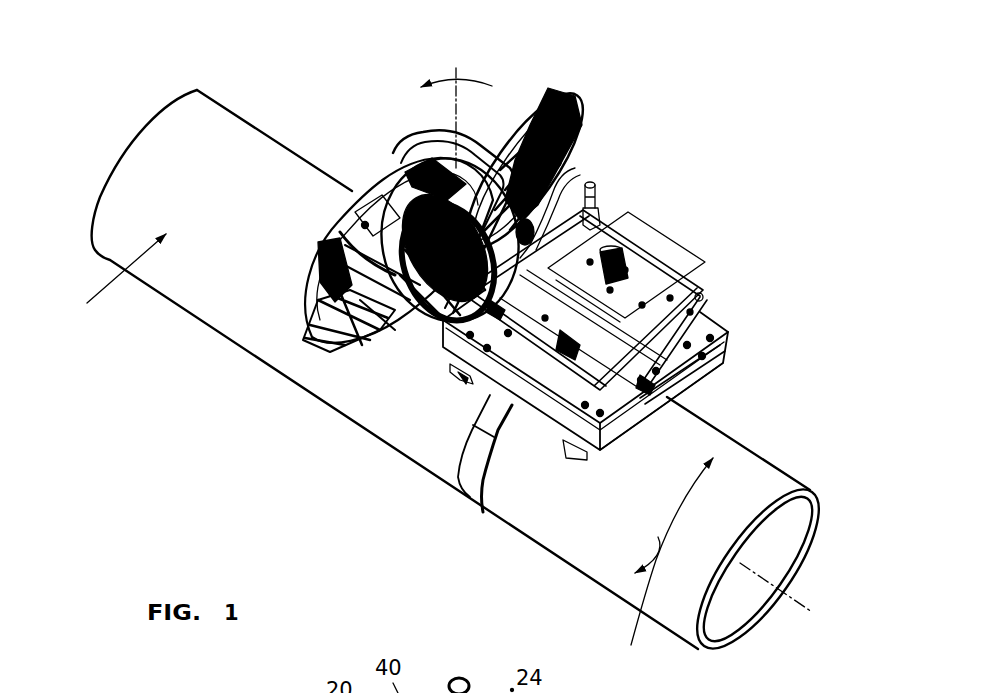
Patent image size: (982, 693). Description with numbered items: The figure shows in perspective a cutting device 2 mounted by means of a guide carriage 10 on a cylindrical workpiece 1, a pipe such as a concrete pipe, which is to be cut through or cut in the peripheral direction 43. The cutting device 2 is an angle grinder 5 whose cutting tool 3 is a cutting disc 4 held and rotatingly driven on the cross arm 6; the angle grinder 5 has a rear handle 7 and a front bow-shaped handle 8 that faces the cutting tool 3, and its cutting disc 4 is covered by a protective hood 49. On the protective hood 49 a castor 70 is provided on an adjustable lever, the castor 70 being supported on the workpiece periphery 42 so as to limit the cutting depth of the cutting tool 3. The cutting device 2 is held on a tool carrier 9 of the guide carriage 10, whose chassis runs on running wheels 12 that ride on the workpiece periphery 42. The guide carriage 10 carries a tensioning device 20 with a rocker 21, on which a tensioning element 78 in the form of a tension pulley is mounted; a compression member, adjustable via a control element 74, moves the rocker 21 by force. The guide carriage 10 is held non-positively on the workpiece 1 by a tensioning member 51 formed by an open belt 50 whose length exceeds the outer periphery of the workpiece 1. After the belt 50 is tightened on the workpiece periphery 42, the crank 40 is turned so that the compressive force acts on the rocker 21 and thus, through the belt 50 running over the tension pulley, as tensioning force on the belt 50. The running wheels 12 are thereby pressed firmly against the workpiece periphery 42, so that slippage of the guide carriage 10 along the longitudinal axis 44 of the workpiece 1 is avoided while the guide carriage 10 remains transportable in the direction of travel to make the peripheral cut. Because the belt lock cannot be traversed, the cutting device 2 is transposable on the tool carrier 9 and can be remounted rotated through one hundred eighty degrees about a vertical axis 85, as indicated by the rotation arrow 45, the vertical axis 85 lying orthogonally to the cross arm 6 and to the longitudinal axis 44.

The cylindrical workpiece 1 is at (117, 167).
The cutting device 2 is at (414, 209).
The cutting tool 3 is at (547, 138).
The cutting disc 4 is at (553, 143).
The angle grinder 5 is at (385, 167).
The cross arm 6 is at (560, 148).
The rear handle 7 is at (317, 320).
The front bow-shaped handle 8 is at (413, 135).
The tool carrier 9 is at (575, 168).
The guide carriage 10 is at (743, 335).
The running wheels 12 is at (452, 374).
The tensioning device 20 is at (682, 262).
The rocker 21 is at (667, 380).
The crank 40 is at (603, 225).
The workpiece periphery 42 is at (109, 283).
The peripheral direction 43 is at (662, 568).
The longitudinal axis 44 is at (798, 603).
The rotation arrow 45 is at (467, 70).
The protective hood 49 is at (530, 105).
The belt 50 is at (470, 490).
The tensioning member 51 is at (460, 443).
The castor 70 is at (540, 230).
The control element 74 is at (643, 232).
The tensioning element 78 is at (698, 297).
The vertical axis 85 is at (455, 70).